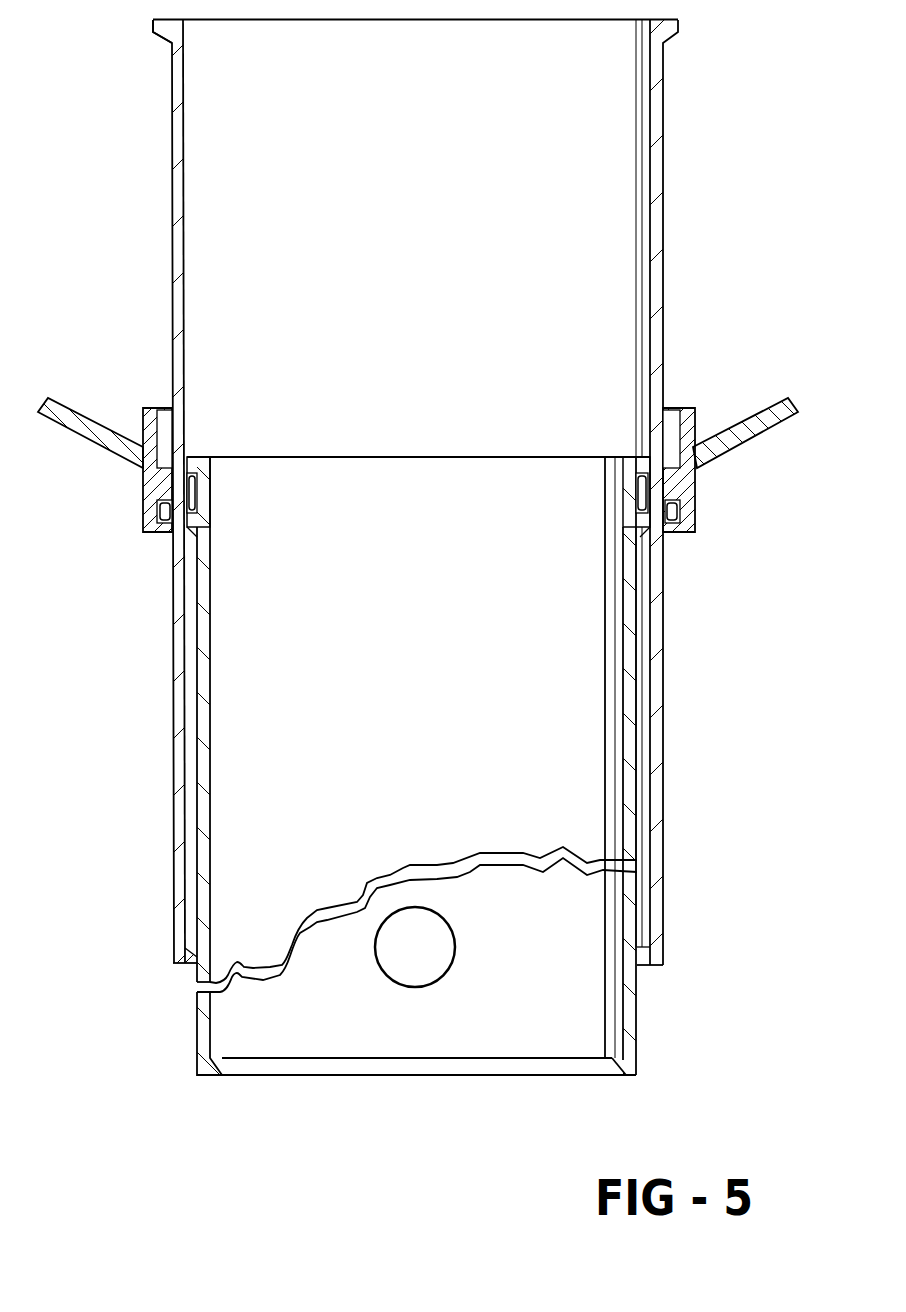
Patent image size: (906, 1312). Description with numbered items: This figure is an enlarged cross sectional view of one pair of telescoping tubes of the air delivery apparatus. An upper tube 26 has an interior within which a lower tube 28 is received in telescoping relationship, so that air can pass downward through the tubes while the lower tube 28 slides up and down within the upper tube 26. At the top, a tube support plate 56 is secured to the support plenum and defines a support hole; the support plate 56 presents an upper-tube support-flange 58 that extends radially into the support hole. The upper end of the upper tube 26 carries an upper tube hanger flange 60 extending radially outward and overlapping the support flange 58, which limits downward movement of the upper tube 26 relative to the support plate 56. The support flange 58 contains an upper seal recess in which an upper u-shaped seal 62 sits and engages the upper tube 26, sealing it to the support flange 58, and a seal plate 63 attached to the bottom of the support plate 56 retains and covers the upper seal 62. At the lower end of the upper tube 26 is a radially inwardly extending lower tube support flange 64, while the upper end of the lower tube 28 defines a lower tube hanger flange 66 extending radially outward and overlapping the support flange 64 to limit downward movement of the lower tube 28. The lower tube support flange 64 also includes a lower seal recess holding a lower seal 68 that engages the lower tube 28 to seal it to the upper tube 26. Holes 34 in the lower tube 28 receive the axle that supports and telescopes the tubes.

The upper tube 26 is at (662, 133).
The lower tube 28 is at (637, 1027).
The holes 34 is at (383, 970).
The tube support plate 56 is at (778, 398).
The upper-tube support-flange 58 is at (677, 490).
The upper tube hanger flange 60 is at (155, 37).
The upper u-shaped seal 62 is at (157, 512).
The seal plate 63 is at (678, 537).
The lower tube support flange 64 is at (182, 967).
The lower tube hanger flange 66 is at (190, 457).
The lower seal 68 is at (197, 487).